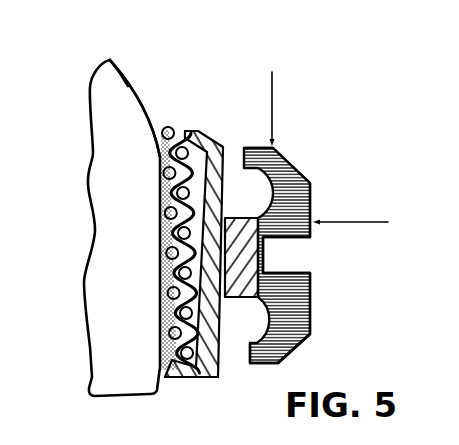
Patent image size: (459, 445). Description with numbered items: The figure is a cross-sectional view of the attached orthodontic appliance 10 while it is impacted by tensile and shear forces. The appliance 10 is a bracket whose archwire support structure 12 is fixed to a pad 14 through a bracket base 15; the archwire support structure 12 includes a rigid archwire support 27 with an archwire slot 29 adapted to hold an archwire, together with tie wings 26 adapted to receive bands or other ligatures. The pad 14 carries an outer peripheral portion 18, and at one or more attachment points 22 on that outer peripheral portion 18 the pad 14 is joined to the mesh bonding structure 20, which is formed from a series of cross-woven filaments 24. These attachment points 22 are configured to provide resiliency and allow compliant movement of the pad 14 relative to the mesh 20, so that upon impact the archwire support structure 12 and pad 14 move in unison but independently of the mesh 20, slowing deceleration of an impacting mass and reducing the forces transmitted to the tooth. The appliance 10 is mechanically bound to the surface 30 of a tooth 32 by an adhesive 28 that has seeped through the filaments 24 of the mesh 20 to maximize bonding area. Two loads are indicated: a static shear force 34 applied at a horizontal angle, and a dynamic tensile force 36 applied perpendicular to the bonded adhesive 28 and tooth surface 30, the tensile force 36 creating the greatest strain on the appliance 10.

The orthodontic appliance 10 is at (330, 172).
The archwire support structure 12 is at (308, 344).
The pad 14 is at (224, 142).
The bracket base 15 is at (208, 229).
The outer peripheral portion 18 is at (208, 135).
The mesh bonding structure 20 is at (172, 127).
The attachment points 22 is at (191, 378).
The filaments 24 is at (161, 175).
The tie wings 26 is at (300, 297).
The rigid archwire support 27 is at (312, 203).
The adhesive 28 is at (160, 321).
The archwire slot 29 is at (300, 264).
The tooth surface 30 is at (113, 57).
The tooth 32 is at (140, 78).
The shear force 34 is at (372, 222).
The tensile force 36 is at (273, 98).